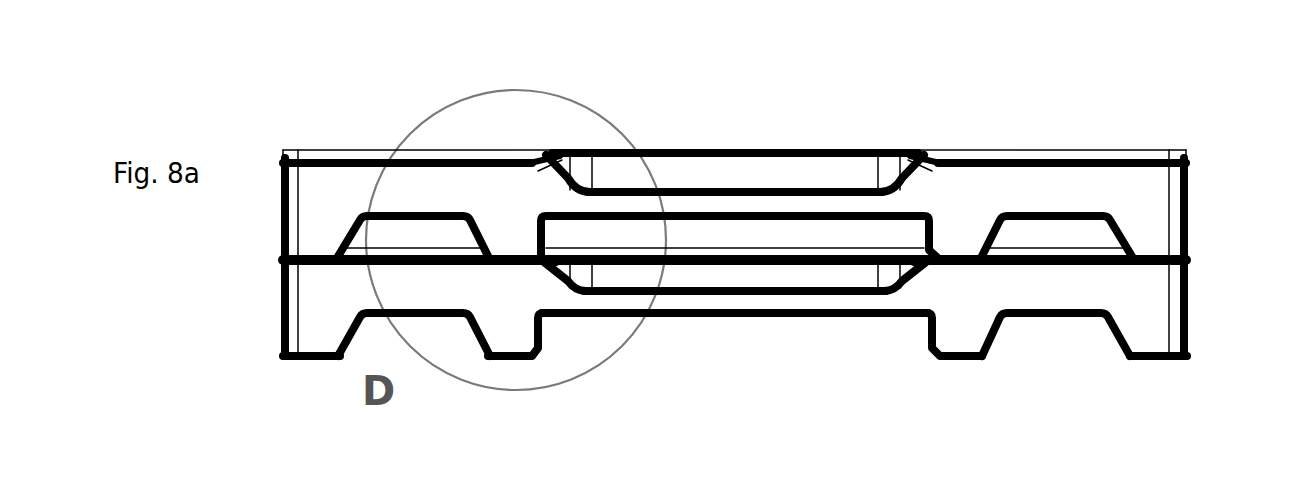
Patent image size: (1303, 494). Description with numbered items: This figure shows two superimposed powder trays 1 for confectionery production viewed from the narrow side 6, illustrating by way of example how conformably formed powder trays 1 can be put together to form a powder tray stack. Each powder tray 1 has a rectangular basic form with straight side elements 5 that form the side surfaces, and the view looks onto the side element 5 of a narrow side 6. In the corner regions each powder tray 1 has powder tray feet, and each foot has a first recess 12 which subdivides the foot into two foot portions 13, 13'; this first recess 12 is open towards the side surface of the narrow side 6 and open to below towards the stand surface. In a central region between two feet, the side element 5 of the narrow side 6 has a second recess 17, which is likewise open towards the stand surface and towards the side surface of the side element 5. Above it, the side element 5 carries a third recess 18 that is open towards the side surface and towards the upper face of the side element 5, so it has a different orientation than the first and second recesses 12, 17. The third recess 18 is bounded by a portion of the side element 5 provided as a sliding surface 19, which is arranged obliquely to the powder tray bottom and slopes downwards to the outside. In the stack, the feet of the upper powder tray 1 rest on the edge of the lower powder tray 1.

The powder tray 1 is at (1110, 164).
The side element 5 is at (978, 144).
The narrow side 6 is at (962, 215).
The first recess 12 is at (415, 236).
The foot portion 13 is at (735, 390).
The foot portion 13' is at (873, 383).
The second recess 17 is at (788, 238).
The third recess 18 is at (735, 132).
The sliding surface 19 is at (727, 180).